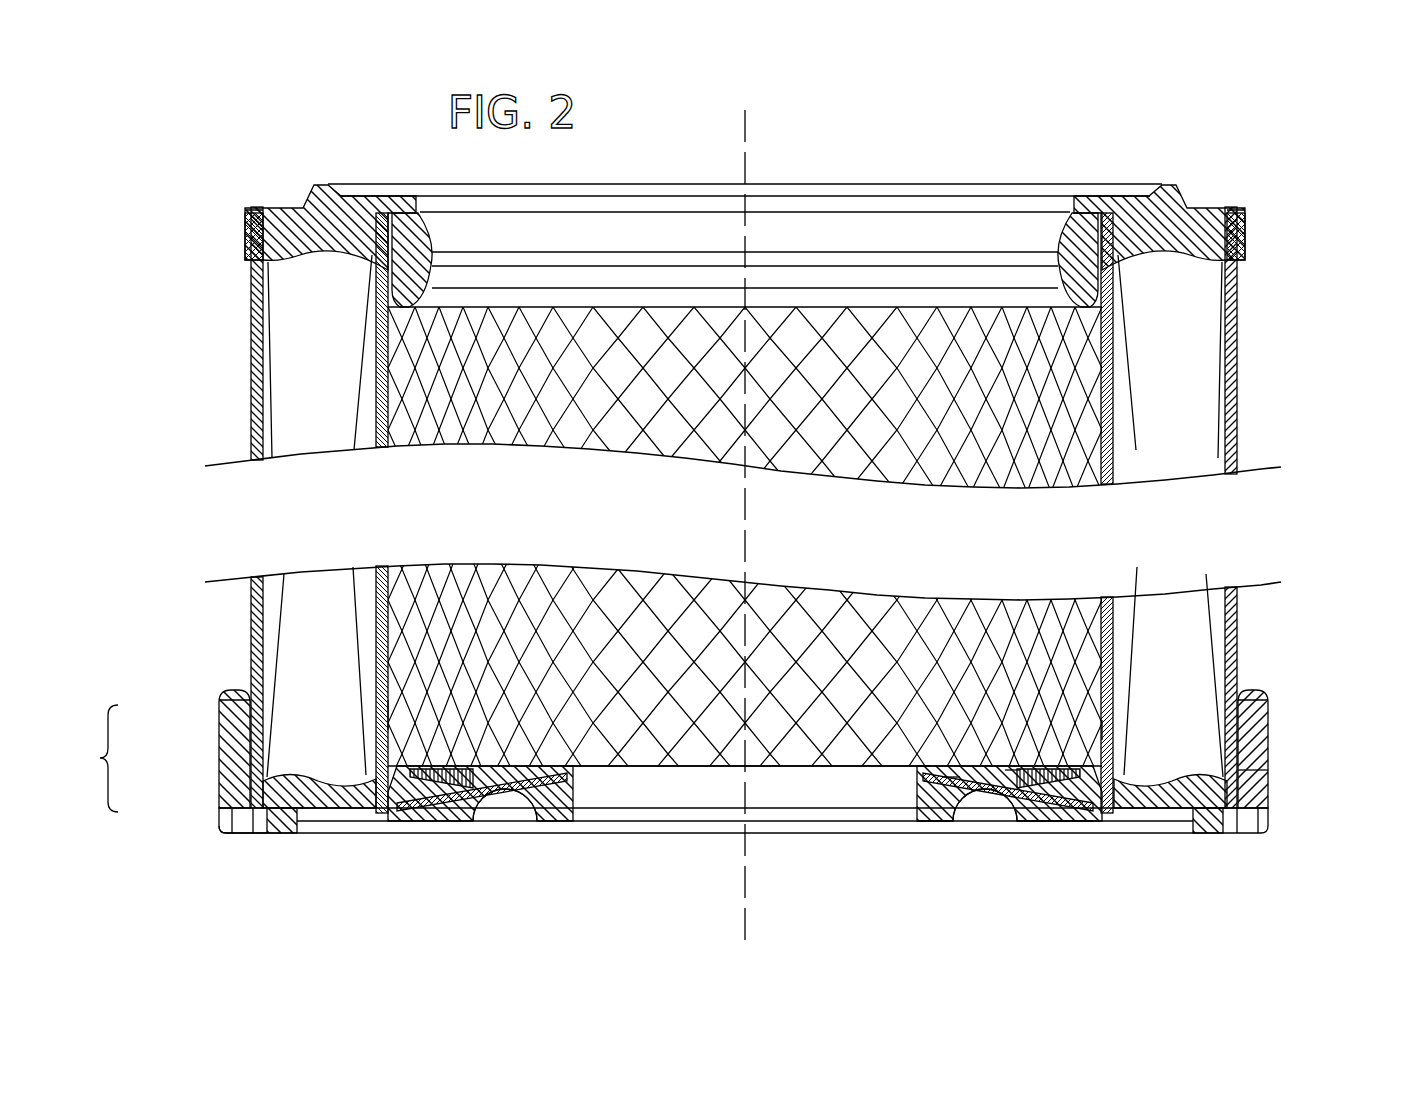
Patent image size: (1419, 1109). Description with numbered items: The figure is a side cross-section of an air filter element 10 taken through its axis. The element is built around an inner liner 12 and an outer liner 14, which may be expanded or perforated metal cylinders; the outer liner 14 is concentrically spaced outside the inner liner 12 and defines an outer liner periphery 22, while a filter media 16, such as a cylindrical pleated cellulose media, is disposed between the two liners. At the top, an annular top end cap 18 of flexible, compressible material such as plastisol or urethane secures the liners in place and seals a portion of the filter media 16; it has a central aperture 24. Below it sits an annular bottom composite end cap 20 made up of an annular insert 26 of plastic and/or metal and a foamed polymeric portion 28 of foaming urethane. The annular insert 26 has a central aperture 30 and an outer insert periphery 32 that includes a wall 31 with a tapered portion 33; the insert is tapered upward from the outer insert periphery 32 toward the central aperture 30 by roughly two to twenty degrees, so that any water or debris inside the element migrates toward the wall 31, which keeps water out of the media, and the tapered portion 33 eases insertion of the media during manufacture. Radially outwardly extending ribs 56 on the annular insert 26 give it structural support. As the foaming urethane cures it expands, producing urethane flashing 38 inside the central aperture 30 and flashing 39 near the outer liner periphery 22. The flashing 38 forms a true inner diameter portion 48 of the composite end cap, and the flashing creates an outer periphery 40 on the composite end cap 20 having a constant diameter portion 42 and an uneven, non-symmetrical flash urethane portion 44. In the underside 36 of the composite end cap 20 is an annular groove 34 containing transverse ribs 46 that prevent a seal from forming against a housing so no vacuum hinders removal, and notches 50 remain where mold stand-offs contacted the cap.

The air filter element 10 is at (198, 168).
The inner liner 12 is at (378, 417).
The outer liner 14 is at (258, 330).
The filter media 16 is at (305, 375).
The annular top end cap 18 is at (1247, 232).
The annular bottom composite end cap 20 is at (412, 816).
The outer liner periphery 22 is at (255, 762).
The central aperture 24 is at (672, 229).
The annular insert 26 is at (1000, 770).
The foamed polymeric portion 28 is at (1012, 765).
The central aperture 30 is at (575, 785).
The wall 31 is at (1120, 732).
The outer insert periphery 32 is at (395, 716).
The tapered portion 33 is at (1268, 770).
The annular groove 34 is at (1007, 828).
The underside 36 is at (940, 822).
The urethane flashing 38 is at (564, 752).
The urethane flashing 39 is at (208, 698).
The outer periphery 40 is at (93, 758).
The constant diameter portion 42 is at (222, 800).
The flash urethane portion 44 is at (219, 715).
The transverse ribs 46 is at (987, 812).
The true inner diameter portion 48 is at (607, 790).
The notches 50 is at (240, 836).
The radially outwardly extending ribs 56 is at (517, 772).